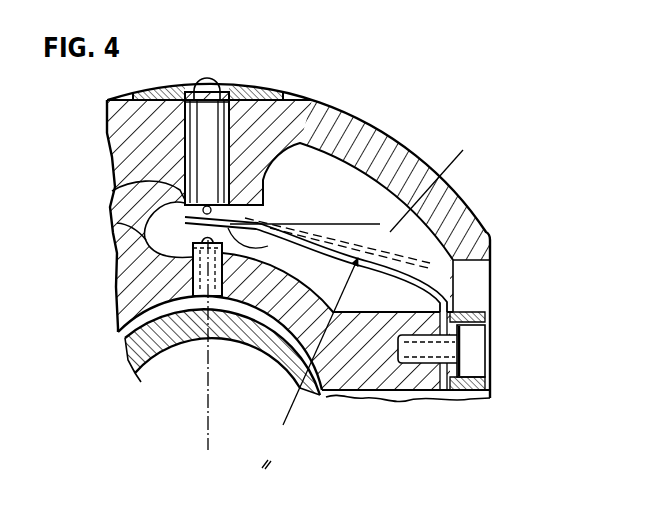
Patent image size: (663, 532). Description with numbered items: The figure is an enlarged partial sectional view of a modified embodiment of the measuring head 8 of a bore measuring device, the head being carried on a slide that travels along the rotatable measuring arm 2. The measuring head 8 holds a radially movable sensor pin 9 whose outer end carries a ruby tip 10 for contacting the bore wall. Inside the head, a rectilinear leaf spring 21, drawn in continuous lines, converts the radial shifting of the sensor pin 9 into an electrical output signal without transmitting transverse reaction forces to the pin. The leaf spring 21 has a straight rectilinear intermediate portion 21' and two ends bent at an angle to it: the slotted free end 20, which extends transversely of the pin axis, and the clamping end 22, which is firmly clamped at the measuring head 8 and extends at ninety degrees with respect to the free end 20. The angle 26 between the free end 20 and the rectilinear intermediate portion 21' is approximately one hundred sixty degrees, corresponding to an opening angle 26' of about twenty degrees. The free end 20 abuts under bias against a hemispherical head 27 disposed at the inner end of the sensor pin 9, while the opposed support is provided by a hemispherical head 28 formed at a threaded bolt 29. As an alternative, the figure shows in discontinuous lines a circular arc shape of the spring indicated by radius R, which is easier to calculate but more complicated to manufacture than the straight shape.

The measuring arm 2 is at (128, 360).
The measuring head 8 is at (402, 146).
The sensor pin 9 is at (216, 147).
The ruby tip 10 is at (213, 80).
The free end 20 is at (112, 221).
The leaf spring 21 is at (316, 238).
The rectilinear intermediate portion 21' is at (386, 220).
The clamping end 22 is at (449, 312).
The angle 26 is at (281, 259).
The opening angle 26' is at (439, 177).
The hemispherical head 27 is at (130, 185).
The hemispherical head 28 is at (128, 258).
The threaded bolt 29 is at (128, 288).
The radius R is at (315, 357).